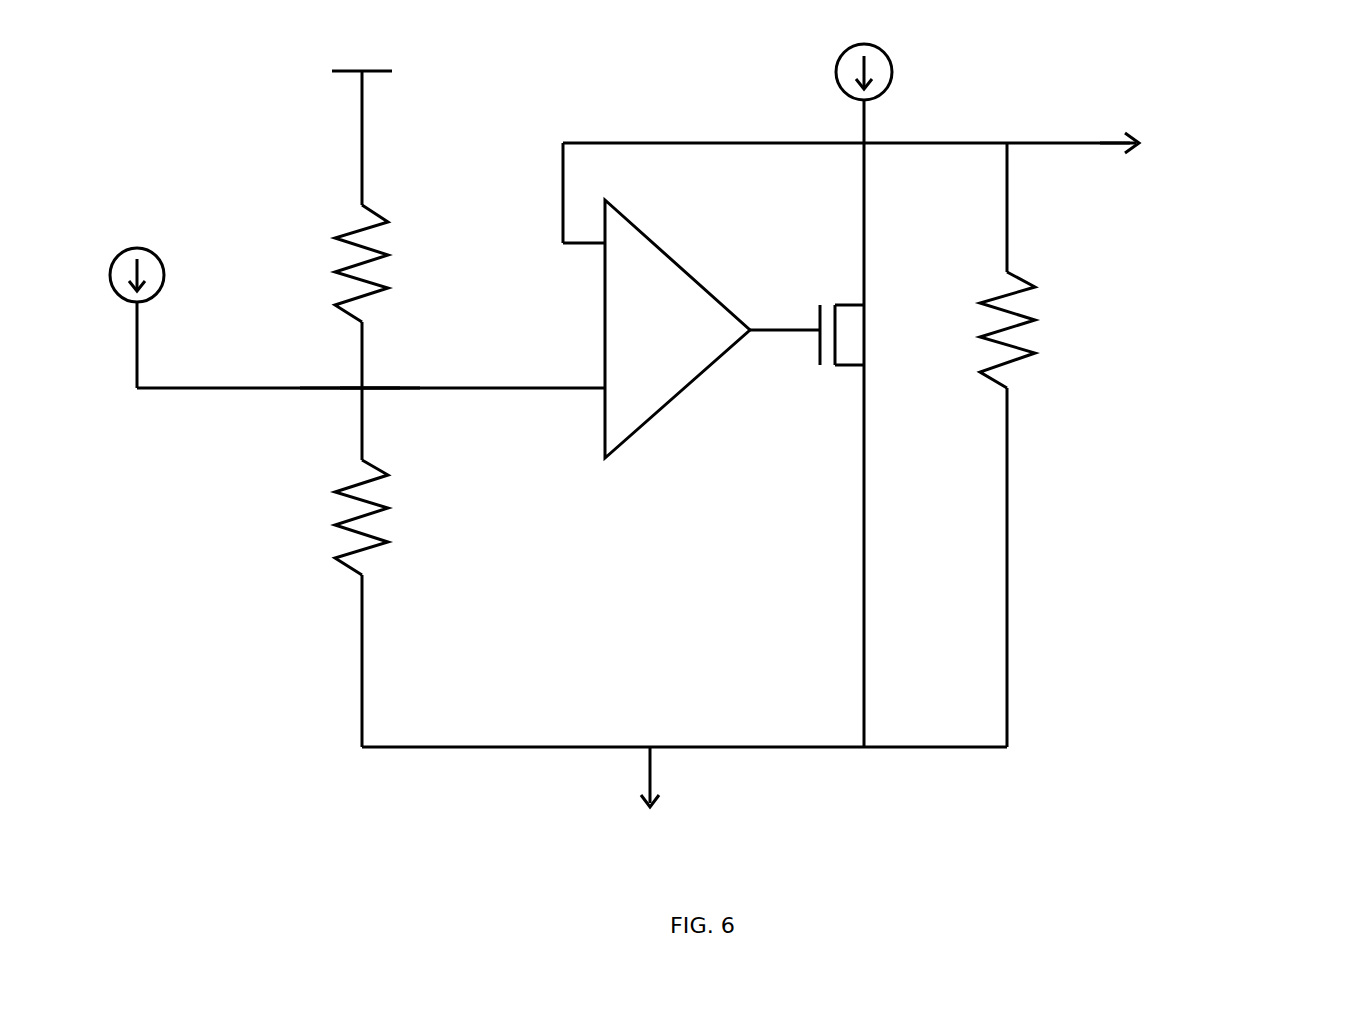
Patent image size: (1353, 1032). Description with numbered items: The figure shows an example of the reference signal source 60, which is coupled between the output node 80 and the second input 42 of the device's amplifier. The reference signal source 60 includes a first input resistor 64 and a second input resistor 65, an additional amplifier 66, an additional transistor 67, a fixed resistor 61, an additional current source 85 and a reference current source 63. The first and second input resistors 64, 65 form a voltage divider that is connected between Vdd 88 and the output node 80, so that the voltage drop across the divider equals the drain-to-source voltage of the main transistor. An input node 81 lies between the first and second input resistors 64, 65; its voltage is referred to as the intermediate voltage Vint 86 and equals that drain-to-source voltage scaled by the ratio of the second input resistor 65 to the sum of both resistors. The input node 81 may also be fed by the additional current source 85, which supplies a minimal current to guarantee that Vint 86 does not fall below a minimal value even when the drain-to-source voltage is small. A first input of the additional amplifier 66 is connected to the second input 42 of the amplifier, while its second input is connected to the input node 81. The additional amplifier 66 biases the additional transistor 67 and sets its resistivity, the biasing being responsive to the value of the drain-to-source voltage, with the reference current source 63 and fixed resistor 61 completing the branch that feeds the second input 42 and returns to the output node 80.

The reference signal source 60 is at (720, 466).
The fixed resistor 61 is at (995, 295).
The reference current source 63 is at (888, 50).
The first input resistor 64 is at (333, 237).
The second input resistor 65 is at (333, 492).
The additional amplifier 66 is at (692, 342).
The additional transistor 67 is at (842, 303).
The output node 80 is at (649, 788).
The input node 81 is at (345, 388).
The additional current source 85 is at (160, 253).
The intermediate voltage Vint 86 is at (370, 387).
The Vdd 88 is at (362, 53).
The second input of the amplifier 42 is at (1215, 141).